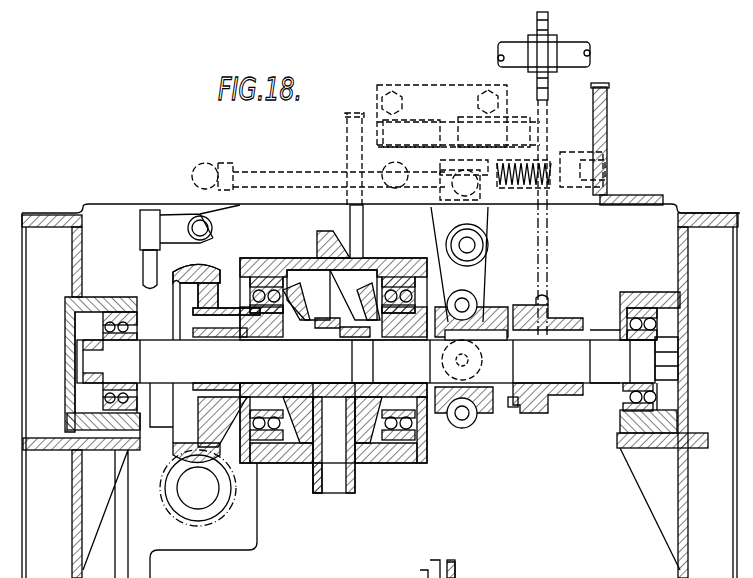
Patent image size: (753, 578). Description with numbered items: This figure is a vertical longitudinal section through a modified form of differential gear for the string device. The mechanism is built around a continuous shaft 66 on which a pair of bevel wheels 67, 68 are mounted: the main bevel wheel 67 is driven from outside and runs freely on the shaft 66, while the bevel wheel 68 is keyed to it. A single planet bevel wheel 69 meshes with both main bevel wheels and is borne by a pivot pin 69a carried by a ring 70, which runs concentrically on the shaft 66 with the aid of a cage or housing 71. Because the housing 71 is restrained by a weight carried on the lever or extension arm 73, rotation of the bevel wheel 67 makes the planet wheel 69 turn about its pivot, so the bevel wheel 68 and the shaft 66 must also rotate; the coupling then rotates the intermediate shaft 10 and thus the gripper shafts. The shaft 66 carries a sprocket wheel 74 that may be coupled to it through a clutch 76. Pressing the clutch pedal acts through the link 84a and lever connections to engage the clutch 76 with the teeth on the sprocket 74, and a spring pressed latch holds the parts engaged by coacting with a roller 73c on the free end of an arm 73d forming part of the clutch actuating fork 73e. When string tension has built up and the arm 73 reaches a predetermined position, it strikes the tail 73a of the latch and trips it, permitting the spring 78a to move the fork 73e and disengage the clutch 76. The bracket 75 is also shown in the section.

The intermediate shaft 10 is at (570, 46).
The continuous shaft 66 is at (366, 361).
The main bevel wheel 67 is at (306, 295).
The bevel wheel 68 is at (365, 300).
The planet bevel wheel 69 is at (360, 432).
The pivot pin 69a is at (330, 463).
The ring 70 is at (347, 325).
The cage or housing 71 is at (390, 266).
The lever or extension arm 73 is at (354, 114).
The tail 73a is at (345, 133).
The roller 73c is at (473, 133).
The arm 73d is at (462, 153).
The clutch actuating fork 73e is at (470, 283).
The sprocket wheel 74 is at (542, 420).
The tensioner bracket 75 is at (548, 278).
The clutch 76 is at (498, 413).
The spring 78a is at (522, 190).
The link 84a is at (148, 270).